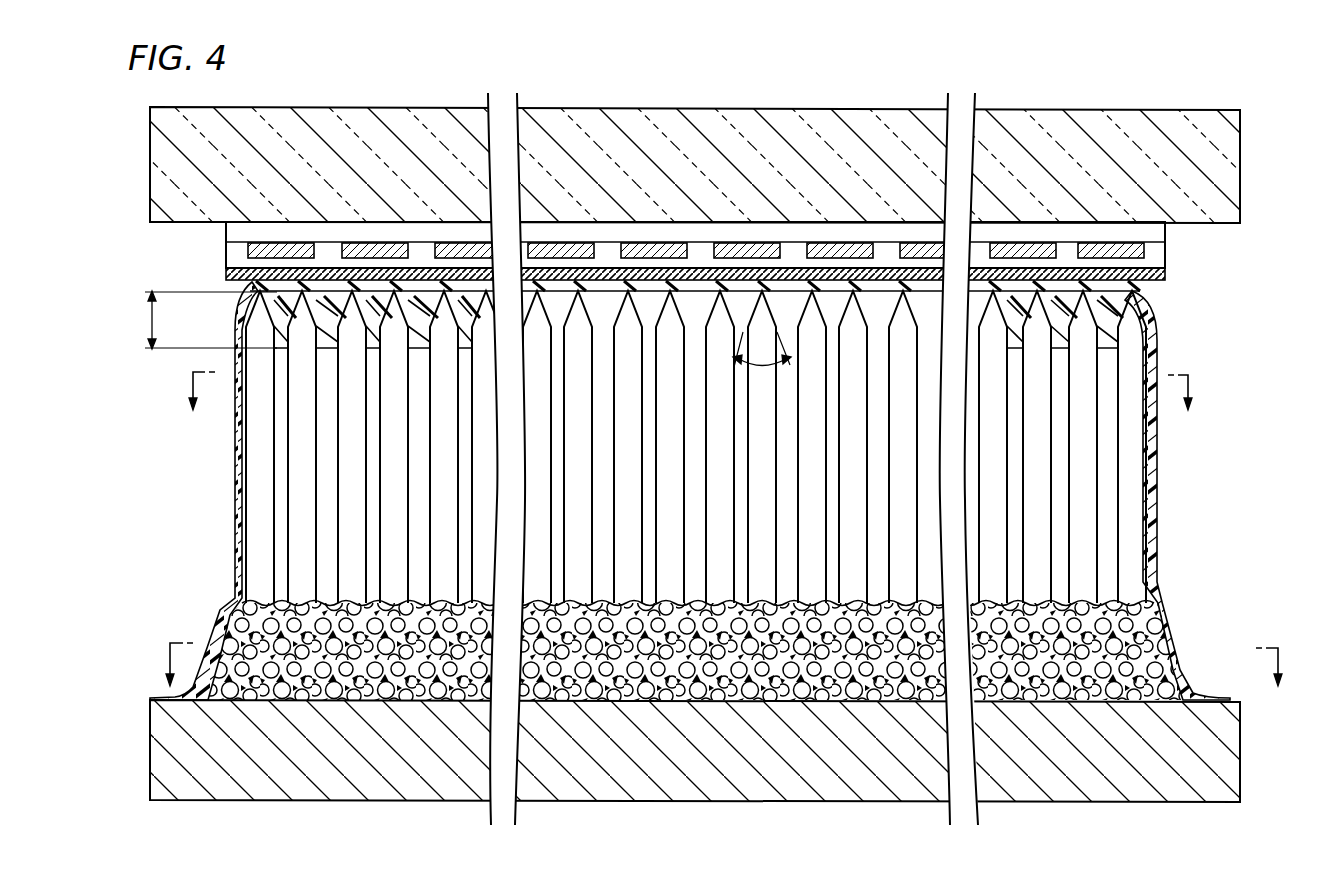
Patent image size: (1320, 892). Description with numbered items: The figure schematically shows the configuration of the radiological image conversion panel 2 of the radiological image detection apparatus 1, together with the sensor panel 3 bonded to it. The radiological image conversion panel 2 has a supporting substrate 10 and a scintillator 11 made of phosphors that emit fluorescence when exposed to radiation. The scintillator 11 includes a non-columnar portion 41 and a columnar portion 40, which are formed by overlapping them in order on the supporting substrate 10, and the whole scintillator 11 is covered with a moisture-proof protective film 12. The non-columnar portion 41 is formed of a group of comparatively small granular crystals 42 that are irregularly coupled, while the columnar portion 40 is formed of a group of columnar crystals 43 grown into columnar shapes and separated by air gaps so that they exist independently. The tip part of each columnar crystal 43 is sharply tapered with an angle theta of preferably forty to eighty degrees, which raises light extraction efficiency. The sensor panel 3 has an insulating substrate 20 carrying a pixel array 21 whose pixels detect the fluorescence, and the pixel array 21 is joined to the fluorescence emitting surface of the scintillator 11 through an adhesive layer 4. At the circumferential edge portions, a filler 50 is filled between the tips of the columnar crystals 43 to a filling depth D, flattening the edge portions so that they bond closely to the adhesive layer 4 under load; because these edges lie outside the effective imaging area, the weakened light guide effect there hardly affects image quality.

The radiological image detection apparatus 1 is at (1164, 75).
The radiological image conversion panel 2 is at (1248, 794).
The sensor panel 3 is at (1248, 122).
The adhesive layer 4 is at (1168, 278).
The supporting substrate 10 is at (1222, 755).
The scintillator 11 is at (1276, 417).
The protective film 12 is at (238, 533).
The insulating substrate 20 is at (1222, 165).
The pixel array 21 is at (1168, 253).
The columnar portion 40 is at (1126, 439).
The non-columnar portion 41 is at (1160, 641).
The granular crystals 42 is at (1152, 688).
The columnar crystal 43 is at (1128, 490).
The filler 50 is at (283, 317).